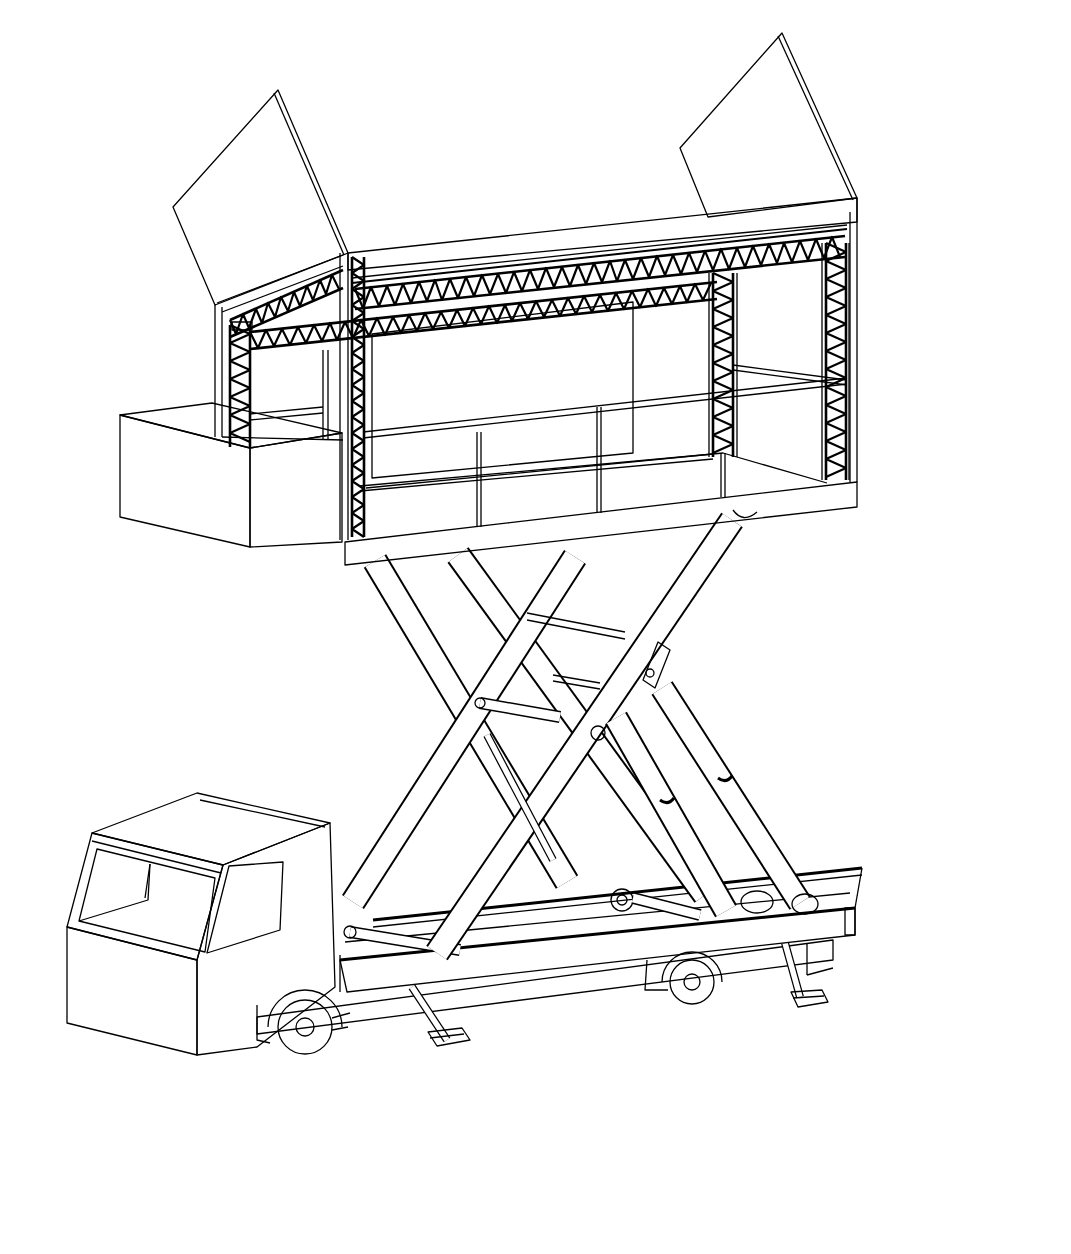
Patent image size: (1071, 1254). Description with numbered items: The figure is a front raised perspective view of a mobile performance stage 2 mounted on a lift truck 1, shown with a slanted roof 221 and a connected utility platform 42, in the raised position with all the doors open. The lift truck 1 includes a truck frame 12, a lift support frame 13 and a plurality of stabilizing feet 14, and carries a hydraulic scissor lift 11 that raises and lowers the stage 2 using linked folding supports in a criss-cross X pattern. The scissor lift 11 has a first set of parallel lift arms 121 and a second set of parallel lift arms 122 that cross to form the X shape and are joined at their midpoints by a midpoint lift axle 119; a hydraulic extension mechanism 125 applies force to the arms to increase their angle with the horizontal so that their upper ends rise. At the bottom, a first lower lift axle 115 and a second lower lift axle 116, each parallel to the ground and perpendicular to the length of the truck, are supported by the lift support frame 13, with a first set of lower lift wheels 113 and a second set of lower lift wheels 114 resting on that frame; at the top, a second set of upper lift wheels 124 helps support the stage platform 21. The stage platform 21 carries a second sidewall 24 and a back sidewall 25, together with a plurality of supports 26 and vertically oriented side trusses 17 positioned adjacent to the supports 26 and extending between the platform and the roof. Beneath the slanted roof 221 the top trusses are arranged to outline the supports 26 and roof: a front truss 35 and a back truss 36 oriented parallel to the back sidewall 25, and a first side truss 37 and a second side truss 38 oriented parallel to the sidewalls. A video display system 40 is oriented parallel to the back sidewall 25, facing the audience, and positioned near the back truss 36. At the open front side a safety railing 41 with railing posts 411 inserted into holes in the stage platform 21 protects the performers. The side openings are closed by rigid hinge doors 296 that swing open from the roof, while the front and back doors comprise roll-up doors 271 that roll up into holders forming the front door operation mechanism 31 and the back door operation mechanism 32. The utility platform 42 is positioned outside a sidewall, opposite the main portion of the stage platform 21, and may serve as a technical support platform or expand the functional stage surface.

The lift truck 1 is at (450, 889).
The performance stage 2 is at (461, 574).
The hydraulic scissor lift 11 is at (607, 756).
The truck frame 12 is at (570, 983).
The lift support frame 13 is at (847, 912).
The stabilizing feet 14 is at (446, 1027).
The side trusses 17 is at (734, 323).
The stage platform 21 is at (393, 543).
The second sidewall 24 is at (750, 374).
The back sidewall 25 is at (300, 422).
The supports 26 is at (346, 253).
The front door operation mechanism 31 is at (590, 260).
The back door operation mechanism 32 is at (232, 337).
The front truss 35 is at (810, 263).
The back truss 36 is at (668, 306).
The first side truss 37 is at (270, 296).
The second side truss 38 is at (743, 268).
The video display system 40 is at (502, 390).
The safety railing 41 is at (561, 408).
The utility platform 42 is at (106, 386).
The first set of lower lift wheels 113 is at (464, 945).
The second set of lower lift wheels 114 is at (588, 883).
The first lower lift axle 115 is at (385, 938).
The second lower lift axle 116 is at (644, 895).
The midpoint lift axle 119 is at (585, 741).
The first set of parallel lift arms 121 is at (410, 787).
The second set of parallel lift arms 122 is at (402, 613).
The second set of upper lift wheels 124 is at (743, 526).
The hydraulic extension mechanism 125 is at (729, 772).
The slanted roof 221 is at (492, 240).
The roll-up door 271 is at (654, 258).
The hinge doors 296 is at (290, 135).
The railing posts 411 is at (480, 439).